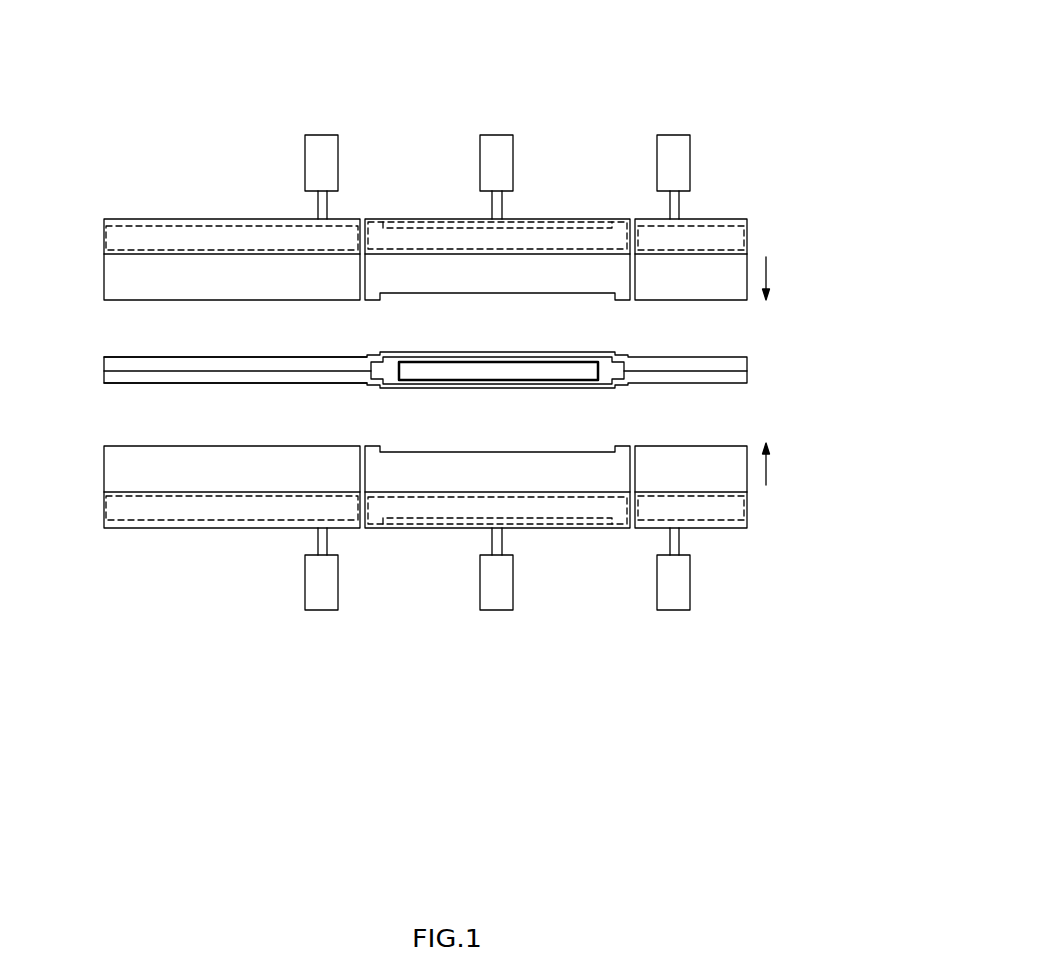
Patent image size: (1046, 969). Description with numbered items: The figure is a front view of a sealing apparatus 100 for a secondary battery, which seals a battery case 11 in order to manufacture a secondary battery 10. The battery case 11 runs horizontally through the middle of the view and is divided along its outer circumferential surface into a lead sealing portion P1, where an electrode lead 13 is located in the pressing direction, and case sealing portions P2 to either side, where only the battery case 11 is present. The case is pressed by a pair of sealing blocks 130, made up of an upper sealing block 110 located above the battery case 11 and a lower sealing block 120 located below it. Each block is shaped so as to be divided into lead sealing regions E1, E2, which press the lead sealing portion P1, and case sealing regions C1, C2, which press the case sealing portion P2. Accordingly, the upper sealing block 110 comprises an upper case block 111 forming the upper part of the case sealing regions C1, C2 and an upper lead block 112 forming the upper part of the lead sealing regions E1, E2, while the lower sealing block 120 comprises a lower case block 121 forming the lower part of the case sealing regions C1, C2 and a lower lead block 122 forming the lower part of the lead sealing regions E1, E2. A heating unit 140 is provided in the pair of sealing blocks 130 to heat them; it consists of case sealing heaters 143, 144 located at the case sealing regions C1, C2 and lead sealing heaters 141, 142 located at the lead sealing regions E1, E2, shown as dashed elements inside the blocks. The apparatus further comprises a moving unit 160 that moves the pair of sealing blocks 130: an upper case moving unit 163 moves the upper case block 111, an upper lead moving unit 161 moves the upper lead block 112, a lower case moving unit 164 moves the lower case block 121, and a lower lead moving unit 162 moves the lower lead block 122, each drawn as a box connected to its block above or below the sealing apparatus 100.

The sealing apparatus 100 is at (724, 25).
The secondary battery 10 is at (70, 372).
The battery case 11 is at (152, 342).
The electrode lead 13 is at (560, 377).
The upper sealing block 110 is at (780, 240).
The upper case block 111 is at (298, 290).
The upper lead block 112 is at (560, 290).
The lower sealing block 120 is at (780, 500).
The lower case block 121 is at (298, 456).
The lower lead block 122 is at (599, 458).
The pair of sealing blocks 130 is at (860, 253).
The heating unit 140 is at (768, 775).
The lead sealing heater 141 is at (553, 232).
The lead sealing heater 142 is at (420, 510).
The case sealing heater 143 is at (168, 232).
The case sealing heater 144 is at (150, 510).
The moving unit 160 is at (620, 775).
The upper lead moving unit 161 is at (496, 135).
The lower lead moving unit 162 is at (498, 614).
The upper case moving unit 163 is at (318, 135).
The lower case moving unit 164 is at (320, 614).
The lead sealing portion P1 is at (425, 406).
The case sealing portion P2 is at (125, 396).
The case sealing region C1 is at (233, 289).
The case sealing region C2 is at (231, 457).
The lead sealing region E1 is at (495, 289).
The lead sealing region E2 is at (495, 457).